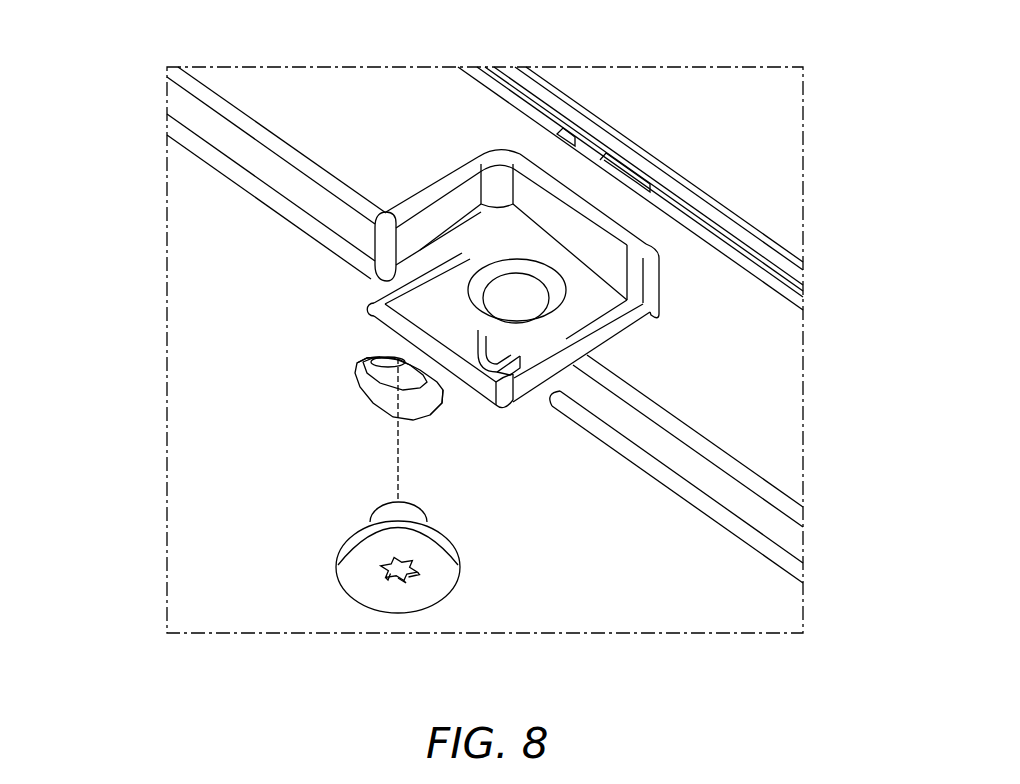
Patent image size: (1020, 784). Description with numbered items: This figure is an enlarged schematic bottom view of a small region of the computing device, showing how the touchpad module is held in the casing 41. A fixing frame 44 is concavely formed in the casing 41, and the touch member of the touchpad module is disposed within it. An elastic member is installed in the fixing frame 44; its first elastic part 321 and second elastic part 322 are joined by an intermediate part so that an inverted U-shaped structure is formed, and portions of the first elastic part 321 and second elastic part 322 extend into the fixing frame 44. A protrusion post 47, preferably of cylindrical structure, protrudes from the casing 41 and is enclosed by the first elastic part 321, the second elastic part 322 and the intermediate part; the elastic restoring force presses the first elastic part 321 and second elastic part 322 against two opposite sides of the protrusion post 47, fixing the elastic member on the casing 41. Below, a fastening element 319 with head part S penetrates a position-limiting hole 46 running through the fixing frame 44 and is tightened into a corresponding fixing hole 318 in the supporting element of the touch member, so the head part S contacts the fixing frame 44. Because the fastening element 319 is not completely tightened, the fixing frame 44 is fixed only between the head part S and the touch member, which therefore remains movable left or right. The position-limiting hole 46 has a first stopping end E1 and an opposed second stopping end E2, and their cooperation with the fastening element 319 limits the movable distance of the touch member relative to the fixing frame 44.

The casing 41 is at (307, 90).
The fixing frame 44 is at (198, 150).
The first elastic part 321 is at (456, 272).
The protrusion post 47 is at (523, 292).
The second elastic part 322 is at (592, 292).
The fixing hole 318 is at (386, 356).
The first stopping end E1 is at (354, 357).
The second stopping end E2 is at (445, 420).
The position-limiting hole 46 is at (102, 343).
The fastening element 319 is at (397, 596).